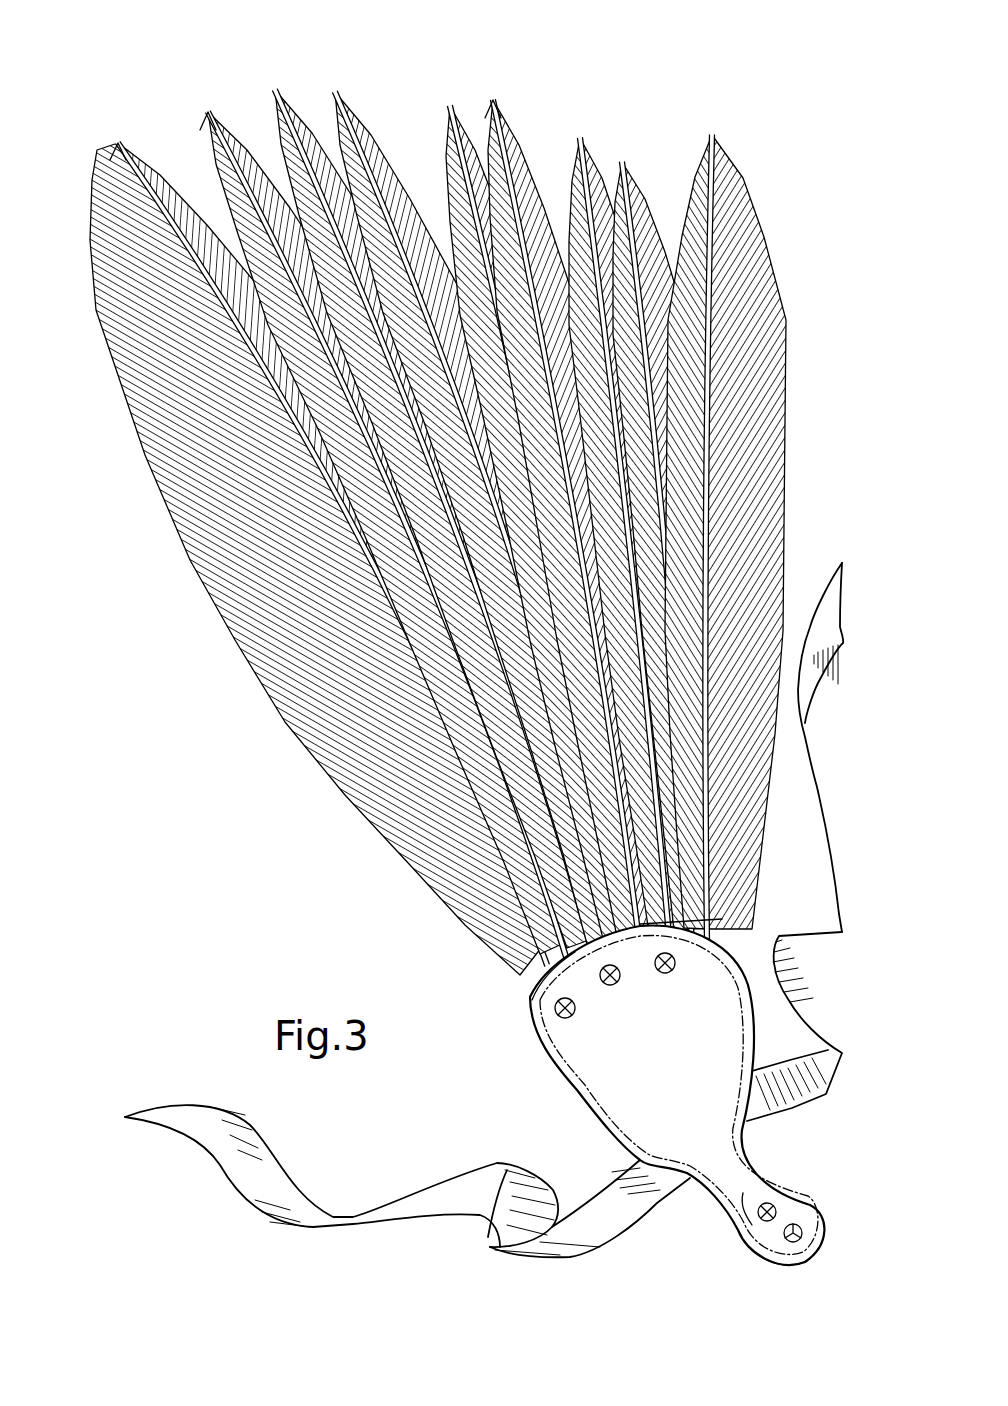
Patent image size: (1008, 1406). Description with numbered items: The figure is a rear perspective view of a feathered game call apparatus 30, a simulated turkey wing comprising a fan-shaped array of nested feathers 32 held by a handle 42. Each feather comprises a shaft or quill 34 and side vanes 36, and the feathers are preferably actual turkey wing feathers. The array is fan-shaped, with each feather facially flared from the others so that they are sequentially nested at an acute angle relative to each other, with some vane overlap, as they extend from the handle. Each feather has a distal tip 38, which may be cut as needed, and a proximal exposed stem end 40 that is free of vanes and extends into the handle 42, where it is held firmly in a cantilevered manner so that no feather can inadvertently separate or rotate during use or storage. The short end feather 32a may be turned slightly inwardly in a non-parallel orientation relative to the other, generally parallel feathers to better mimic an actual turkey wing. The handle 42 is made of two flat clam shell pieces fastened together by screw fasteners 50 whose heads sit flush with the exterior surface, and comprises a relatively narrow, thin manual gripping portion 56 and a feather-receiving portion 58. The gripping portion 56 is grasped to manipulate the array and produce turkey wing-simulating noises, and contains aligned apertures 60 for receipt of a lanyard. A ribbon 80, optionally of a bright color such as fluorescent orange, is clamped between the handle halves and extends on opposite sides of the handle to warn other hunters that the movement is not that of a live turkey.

The feathered game call apparatus 30 is at (456, 493).
The feathers 32 is at (133, 151).
The short end feather 32a is at (780, 400).
The quill 34 is at (345, 712).
The vanes 36 is at (320, 440).
The distal tip 38 is at (121, 146).
The exposed stem end 40 is at (687, 922).
The handle 42 is at (621, 1128).
The screw fasteners 50 is at (540, 1041).
The manual gripping portion 56 is at (743, 1193).
The feather-receiving portion 58 is at (530, 990).
The apertures 60 is at (763, 1260).
The ribbon 80 is at (820, 937).